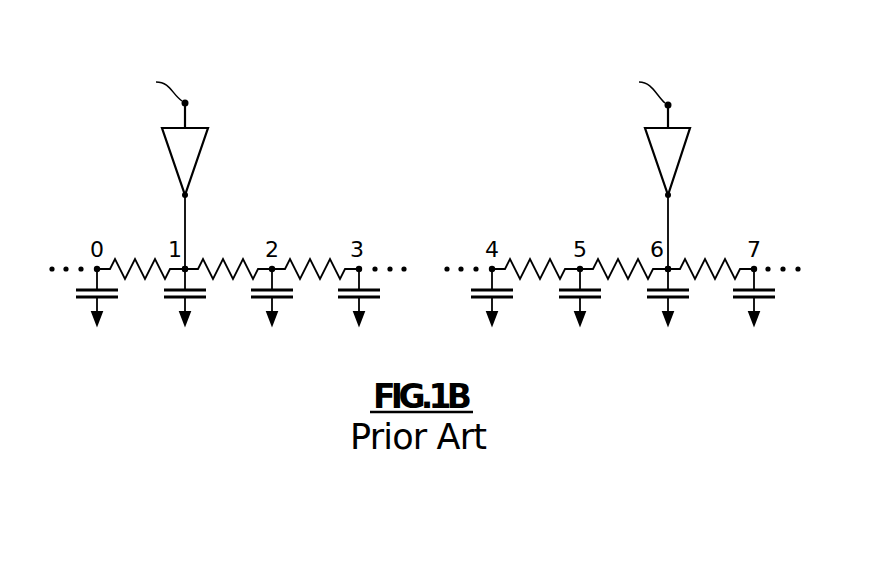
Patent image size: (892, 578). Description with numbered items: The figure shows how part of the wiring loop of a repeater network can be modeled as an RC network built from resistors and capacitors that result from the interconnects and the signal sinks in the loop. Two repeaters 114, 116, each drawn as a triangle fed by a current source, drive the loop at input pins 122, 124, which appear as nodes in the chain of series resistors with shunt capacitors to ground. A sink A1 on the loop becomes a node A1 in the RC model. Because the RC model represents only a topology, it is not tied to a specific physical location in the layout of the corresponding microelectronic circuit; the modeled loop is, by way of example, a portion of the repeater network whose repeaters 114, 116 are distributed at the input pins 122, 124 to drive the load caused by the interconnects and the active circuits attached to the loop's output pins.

The repeater 114 is at (170, 160).
The repeater 116 is at (683, 157).
The input pin 122 is at (186, 265).
The input pin 124 is at (669, 265).
The sink A1 is at (346, 256).